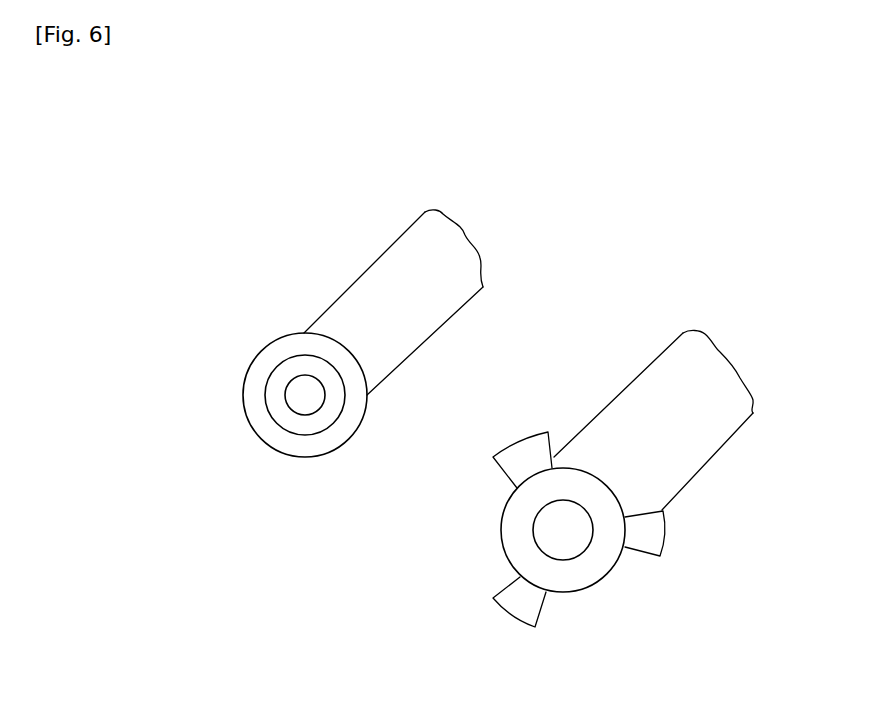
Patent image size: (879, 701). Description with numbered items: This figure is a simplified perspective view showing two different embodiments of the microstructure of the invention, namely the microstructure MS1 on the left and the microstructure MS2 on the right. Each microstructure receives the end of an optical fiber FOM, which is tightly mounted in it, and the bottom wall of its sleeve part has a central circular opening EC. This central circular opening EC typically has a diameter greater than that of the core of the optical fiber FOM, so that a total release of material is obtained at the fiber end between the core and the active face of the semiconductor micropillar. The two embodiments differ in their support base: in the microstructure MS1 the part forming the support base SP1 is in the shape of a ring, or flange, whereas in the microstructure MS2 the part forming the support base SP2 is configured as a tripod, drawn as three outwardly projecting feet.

The microstructure MS1 is at (236, 342).
The microstructure MS2 is at (695, 522).
The support base SP1 is at (350, 415).
The support base SP2 is at (524, 445).
The central circular opening EC is at (302, 398).
The optical fiber FOM is at (445, 303).